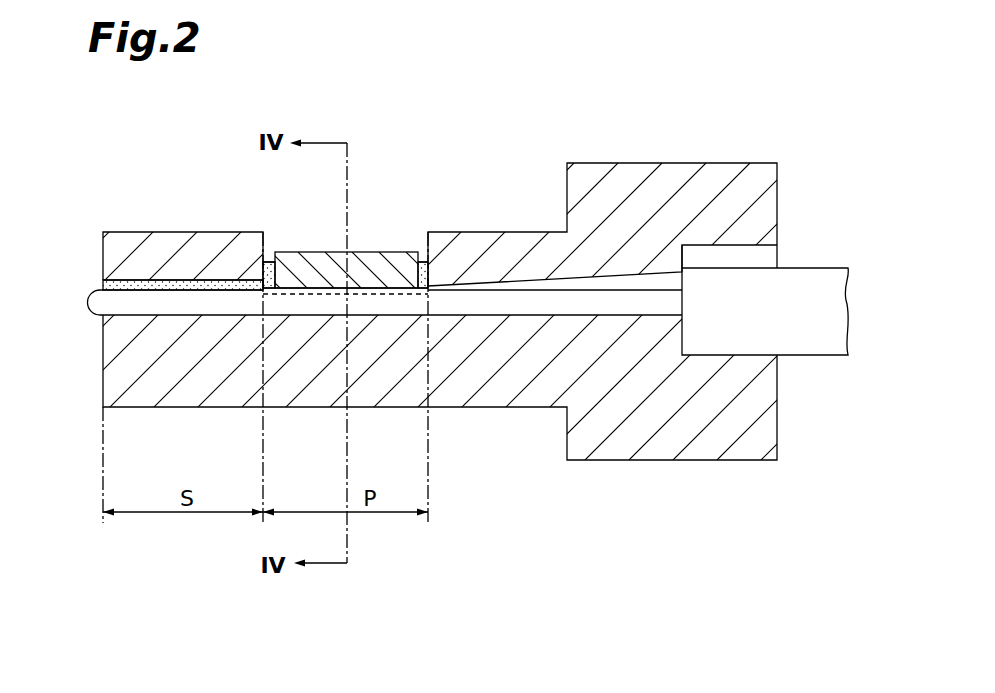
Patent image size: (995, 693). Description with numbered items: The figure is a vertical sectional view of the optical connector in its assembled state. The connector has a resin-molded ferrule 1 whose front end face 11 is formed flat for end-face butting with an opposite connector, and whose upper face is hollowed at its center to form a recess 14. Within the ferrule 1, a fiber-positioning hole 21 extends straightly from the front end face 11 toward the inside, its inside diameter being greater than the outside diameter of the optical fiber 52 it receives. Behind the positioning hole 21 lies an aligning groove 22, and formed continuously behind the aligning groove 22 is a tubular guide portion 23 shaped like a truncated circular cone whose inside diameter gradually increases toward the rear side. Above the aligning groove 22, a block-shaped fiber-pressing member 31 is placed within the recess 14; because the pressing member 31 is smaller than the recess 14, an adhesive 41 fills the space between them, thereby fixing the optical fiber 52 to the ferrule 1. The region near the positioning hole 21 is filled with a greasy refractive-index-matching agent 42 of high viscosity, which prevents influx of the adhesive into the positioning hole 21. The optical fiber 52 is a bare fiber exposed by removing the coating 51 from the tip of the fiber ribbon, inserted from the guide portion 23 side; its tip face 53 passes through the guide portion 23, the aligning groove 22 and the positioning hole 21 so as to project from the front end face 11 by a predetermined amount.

The ferrule 1 is at (757, 130).
The front end face 11 is at (103, 362).
The recess 14 is at (379, 232).
The fiber-positioning hole 21 is at (165, 278).
The aligning groove 22 is at (394, 318).
The guide portion 23 is at (600, 283).
The fiber-pressing member 31 is at (306, 252).
The adhesive 41 is at (268, 262).
The refractive-index-matching agent 42 is at (103, 287).
The coating 51 is at (832, 345).
The optical fiber 52 is at (517, 300).
The tip face 53 is at (87, 305).